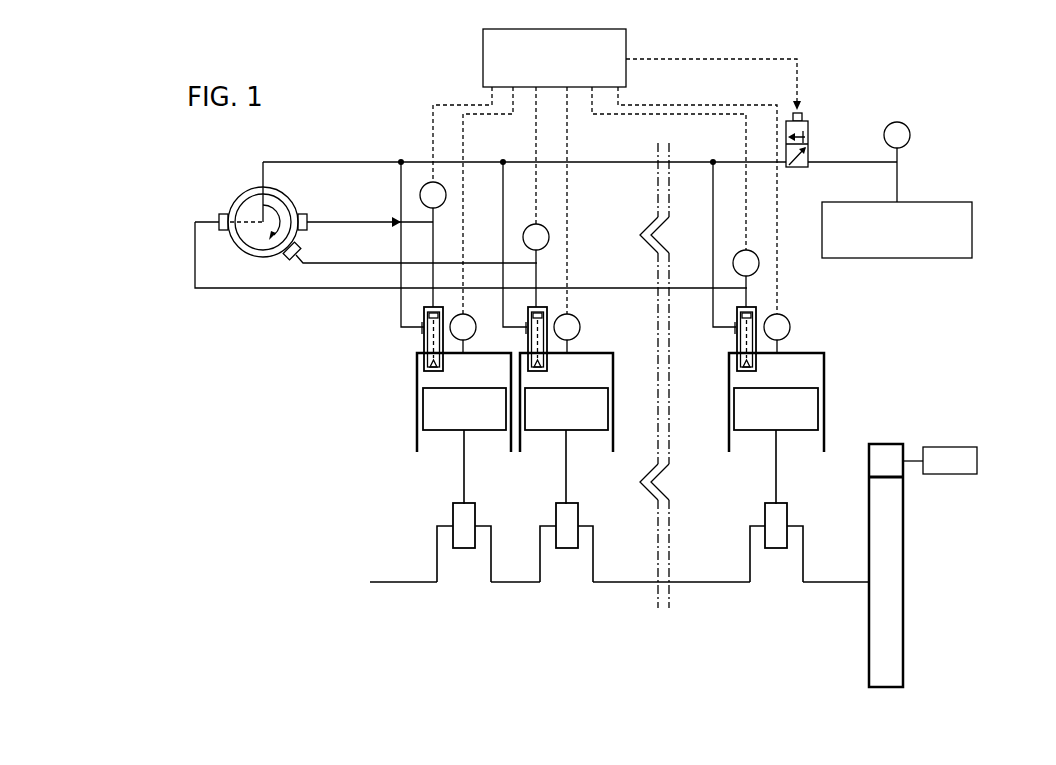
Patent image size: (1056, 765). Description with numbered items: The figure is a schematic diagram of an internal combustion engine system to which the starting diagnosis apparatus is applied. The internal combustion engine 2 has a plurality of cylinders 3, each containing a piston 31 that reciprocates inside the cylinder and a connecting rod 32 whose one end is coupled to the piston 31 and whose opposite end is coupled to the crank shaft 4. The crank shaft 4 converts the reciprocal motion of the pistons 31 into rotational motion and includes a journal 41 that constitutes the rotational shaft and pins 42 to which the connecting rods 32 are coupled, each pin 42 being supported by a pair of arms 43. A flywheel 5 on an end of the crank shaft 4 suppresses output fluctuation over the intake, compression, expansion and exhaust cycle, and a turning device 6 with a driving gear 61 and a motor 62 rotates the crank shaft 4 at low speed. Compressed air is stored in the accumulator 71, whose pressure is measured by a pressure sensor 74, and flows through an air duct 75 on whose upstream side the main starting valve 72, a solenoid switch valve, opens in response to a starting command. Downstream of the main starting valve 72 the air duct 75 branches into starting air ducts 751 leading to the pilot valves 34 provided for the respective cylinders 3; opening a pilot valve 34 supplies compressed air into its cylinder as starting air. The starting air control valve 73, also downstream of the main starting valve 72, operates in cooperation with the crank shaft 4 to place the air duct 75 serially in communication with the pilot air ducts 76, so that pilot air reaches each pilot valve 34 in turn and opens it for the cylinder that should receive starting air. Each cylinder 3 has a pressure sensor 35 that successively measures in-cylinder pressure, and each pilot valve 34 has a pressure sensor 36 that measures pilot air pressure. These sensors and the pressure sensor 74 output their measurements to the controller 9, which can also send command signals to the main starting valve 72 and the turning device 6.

The internal combustion engine 2 is at (846, 338).
The cylinder 3 is at (417, 362).
The crank shaft 4 is at (627, 598).
The flywheel 5 is at (895, 536).
The turning device 6 is at (928, 428).
The controller 9 is at (626, 38).
The piston 31 is at (430, 413).
The connecting rod 32 is at (462, 469).
The pilot valve 34 is at (424, 343).
The pressure sensor 35 is at (472, 318).
The pressure sensor 36 is at (440, 208).
The journal 41 is at (400, 584).
The pin 42 is at (481, 526).
The arm 43 is at (437, 555).
The driving gear 61 is at (889, 456).
The motor 62 is at (977, 459).
The accumulator 71 is at (972, 230).
The main starting valve 72 is at (808, 133).
The starting air control valve 73 is at (242, 199).
The pressure sensor 74 is at (910, 135).
The air duct 75 is at (585, 161).
The pilot air duct 76 is at (320, 218).
The starting air duct 751 is at (401, 202).